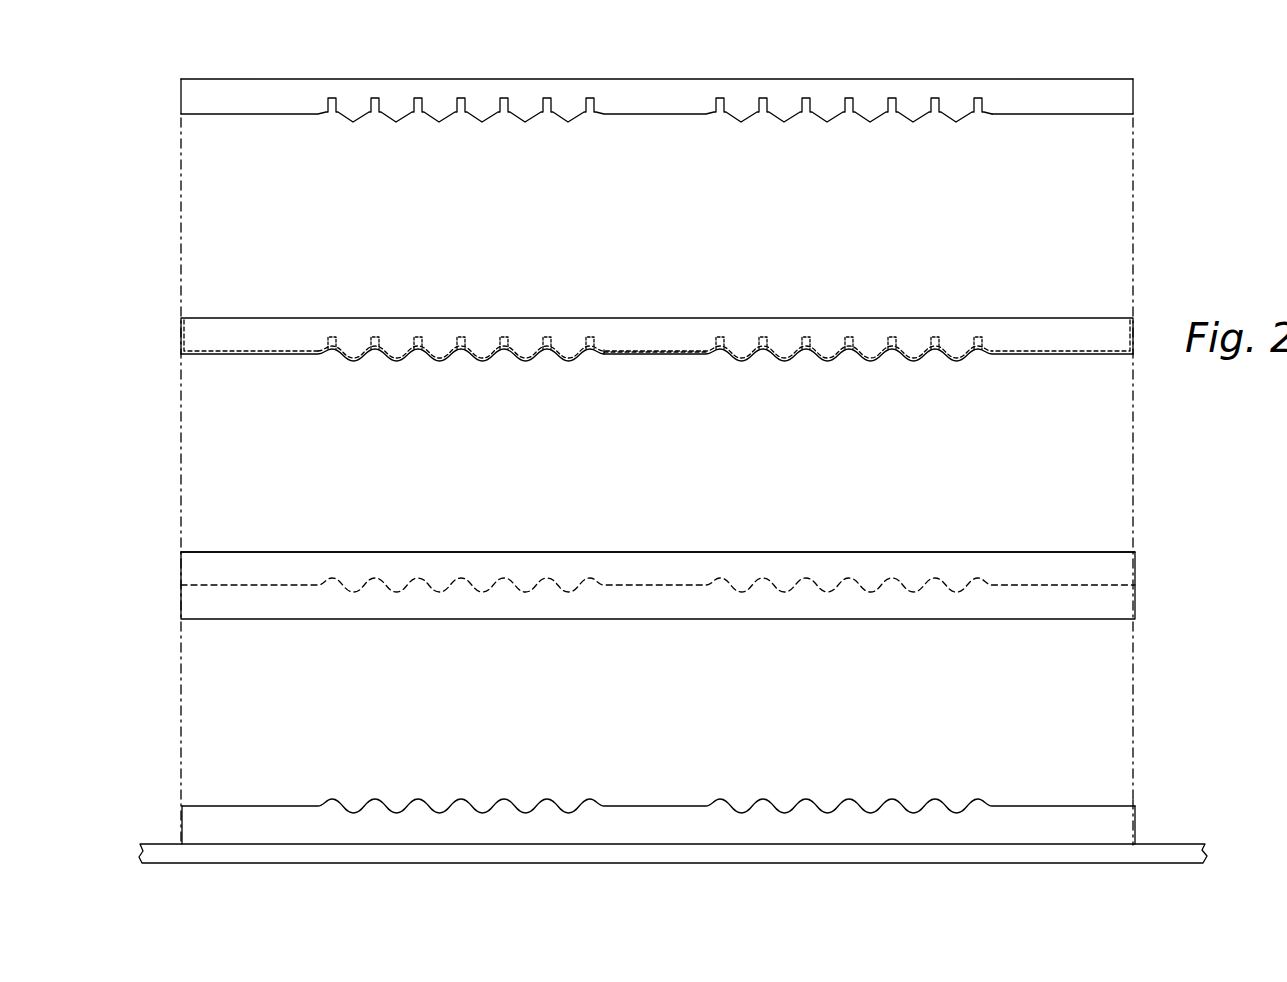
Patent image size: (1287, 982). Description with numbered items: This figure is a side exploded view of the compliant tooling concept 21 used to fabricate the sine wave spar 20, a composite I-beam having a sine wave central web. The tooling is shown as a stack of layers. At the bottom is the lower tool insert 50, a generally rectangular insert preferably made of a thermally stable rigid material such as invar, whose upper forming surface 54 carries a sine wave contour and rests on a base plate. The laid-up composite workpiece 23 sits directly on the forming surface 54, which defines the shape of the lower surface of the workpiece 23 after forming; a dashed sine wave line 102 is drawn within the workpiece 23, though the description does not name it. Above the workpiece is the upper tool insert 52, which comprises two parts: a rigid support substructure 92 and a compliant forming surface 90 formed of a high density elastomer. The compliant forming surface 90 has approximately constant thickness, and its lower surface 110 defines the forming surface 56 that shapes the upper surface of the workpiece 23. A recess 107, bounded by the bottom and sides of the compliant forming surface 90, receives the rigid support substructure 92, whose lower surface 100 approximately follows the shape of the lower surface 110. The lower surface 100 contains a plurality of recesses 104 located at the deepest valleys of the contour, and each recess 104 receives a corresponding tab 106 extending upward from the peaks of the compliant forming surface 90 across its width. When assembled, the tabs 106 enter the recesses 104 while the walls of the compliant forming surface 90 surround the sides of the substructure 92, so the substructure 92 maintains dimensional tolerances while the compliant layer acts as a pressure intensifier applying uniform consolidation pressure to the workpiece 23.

The sine wave spar 20 is at (1136, 597).
The compliant tooling concept 21 is at (150, 413).
The composite workpiece 23 is at (181, 596).
The lower tool insert 50 is at (1137, 821).
The upper tool insert 52 is at (1107, 92).
The forming surface 54 is at (407, 812).
The forming surface 56 is at (395, 361).
The compliant forming surface 90 is at (277, 330).
The rigid support substructure 92 is at (304, 79).
The lower surface 100 is at (1030, 114).
The undulating pattern 102 is at (826, 583).
The recesses 104 is at (504, 98).
The tabs 106 is at (418, 340).
The recess 107 is at (642, 330).
The lower surface 110 is at (605, 356).